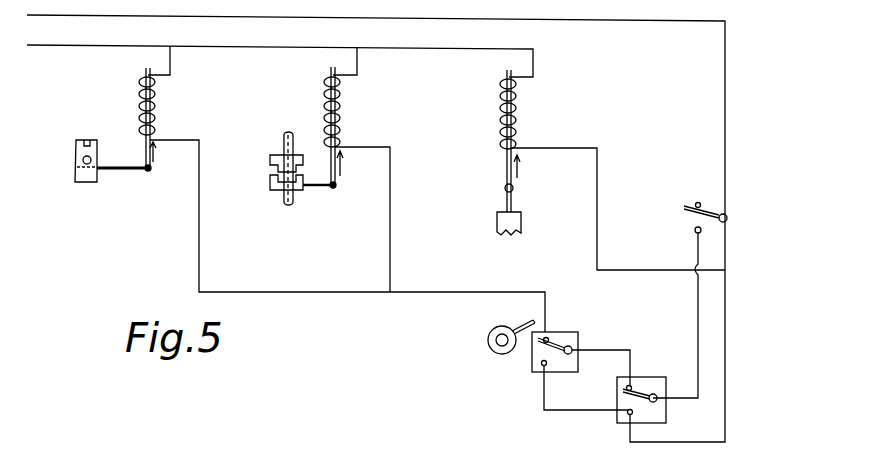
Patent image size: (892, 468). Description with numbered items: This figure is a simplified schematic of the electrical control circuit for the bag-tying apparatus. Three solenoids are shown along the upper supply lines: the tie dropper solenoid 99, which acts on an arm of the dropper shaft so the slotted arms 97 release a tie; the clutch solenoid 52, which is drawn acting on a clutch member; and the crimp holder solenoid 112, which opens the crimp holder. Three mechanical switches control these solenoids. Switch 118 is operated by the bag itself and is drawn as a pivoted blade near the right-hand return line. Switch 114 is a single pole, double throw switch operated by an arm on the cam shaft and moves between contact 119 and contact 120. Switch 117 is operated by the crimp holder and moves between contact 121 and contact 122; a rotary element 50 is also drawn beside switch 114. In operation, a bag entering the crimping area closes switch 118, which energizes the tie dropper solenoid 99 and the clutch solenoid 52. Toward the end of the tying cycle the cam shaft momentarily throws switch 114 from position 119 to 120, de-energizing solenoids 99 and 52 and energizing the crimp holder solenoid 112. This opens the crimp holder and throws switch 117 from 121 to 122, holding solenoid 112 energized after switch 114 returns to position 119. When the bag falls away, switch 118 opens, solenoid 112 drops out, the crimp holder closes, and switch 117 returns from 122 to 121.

The rotary handle switch 50 is at (488, 342).
The clutch solenoid 52 is at (345, 103).
The arms 97 is at (75, 152).
The tie dropper solenoid 99 is at (140, 96).
The crimp holder solenoid 112 is at (521, 100).
The switch 114 is at (578, 340).
The switch 117 is at (646, 380).
The switch 118 is at (726, 222).
The single pole double throw switch position 119 is at (548, 337).
The switch position 120 is at (542, 366).
The switch position 121 is at (628, 385).
The switch position 122 is at (629, 416).